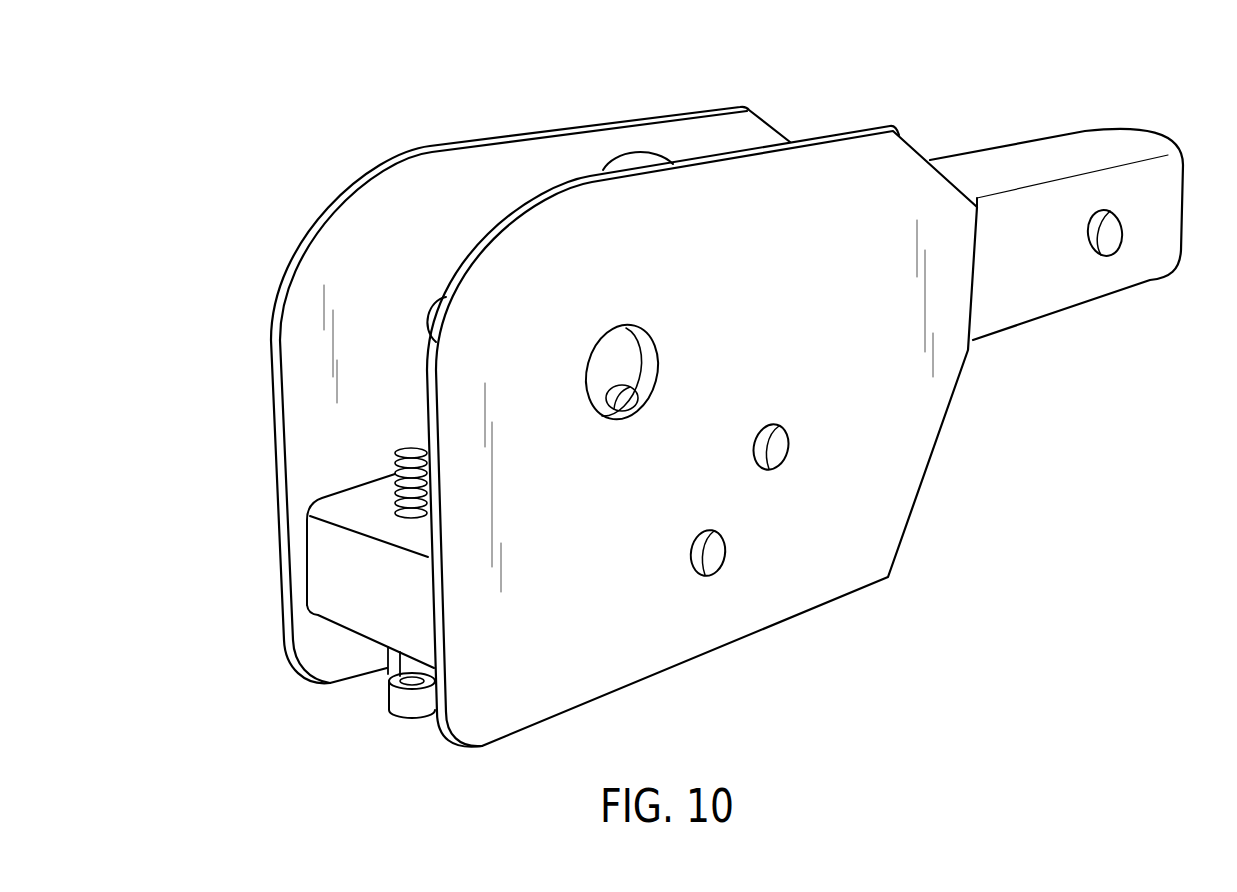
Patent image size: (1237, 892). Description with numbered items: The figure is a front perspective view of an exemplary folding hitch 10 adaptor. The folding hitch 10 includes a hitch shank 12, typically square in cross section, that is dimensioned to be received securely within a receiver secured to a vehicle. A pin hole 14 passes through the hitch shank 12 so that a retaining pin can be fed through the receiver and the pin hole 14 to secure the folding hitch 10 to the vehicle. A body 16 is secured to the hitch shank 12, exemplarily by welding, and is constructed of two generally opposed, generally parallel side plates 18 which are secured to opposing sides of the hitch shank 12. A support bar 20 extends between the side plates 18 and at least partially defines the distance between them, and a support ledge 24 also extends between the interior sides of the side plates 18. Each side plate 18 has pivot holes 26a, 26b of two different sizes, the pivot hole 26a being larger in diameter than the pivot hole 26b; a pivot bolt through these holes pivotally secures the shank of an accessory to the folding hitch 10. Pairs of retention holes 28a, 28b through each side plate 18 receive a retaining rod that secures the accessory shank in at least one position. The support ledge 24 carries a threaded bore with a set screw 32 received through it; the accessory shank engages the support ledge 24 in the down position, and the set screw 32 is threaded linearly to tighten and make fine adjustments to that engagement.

The folding hitch 10 is at (327, 137).
The hitch shank 12 is at (1070, 297).
The pin hole 14 is at (1113, 225).
The body 16 is at (316, 243).
The side plates 18 is at (307, 403).
The support bar 20 is at (627, 157).
The support ledge 24 is at (333, 558).
The pivot hole 26a is at (622, 323).
The pivot hole 26b is at (436, 308).
The retention hole 28a is at (717, 548).
The retention hole 28b is at (610, 407).
The set screw 32 is at (408, 707).